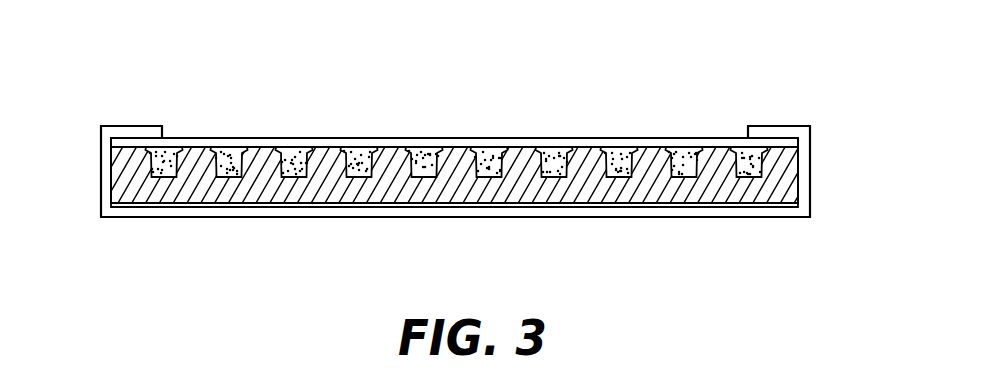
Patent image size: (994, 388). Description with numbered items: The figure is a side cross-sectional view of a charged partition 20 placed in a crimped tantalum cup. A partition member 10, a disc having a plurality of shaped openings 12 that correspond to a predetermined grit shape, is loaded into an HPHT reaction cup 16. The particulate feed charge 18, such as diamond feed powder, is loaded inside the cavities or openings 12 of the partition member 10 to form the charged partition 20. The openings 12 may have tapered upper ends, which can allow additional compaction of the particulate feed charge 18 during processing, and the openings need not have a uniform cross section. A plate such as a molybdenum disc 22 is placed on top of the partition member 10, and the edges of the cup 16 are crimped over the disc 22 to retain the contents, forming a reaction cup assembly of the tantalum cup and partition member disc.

The partition member 10 is at (790, 168).
The shaped openings 12 is at (270, 158).
The HPHT reaction cup 16 is at (110, 165).
The particulate feed charge 18 is at (427, 152).
The charged partition 20 is at (660, 90).
The molybdenum disc 22 is at (532, 137).